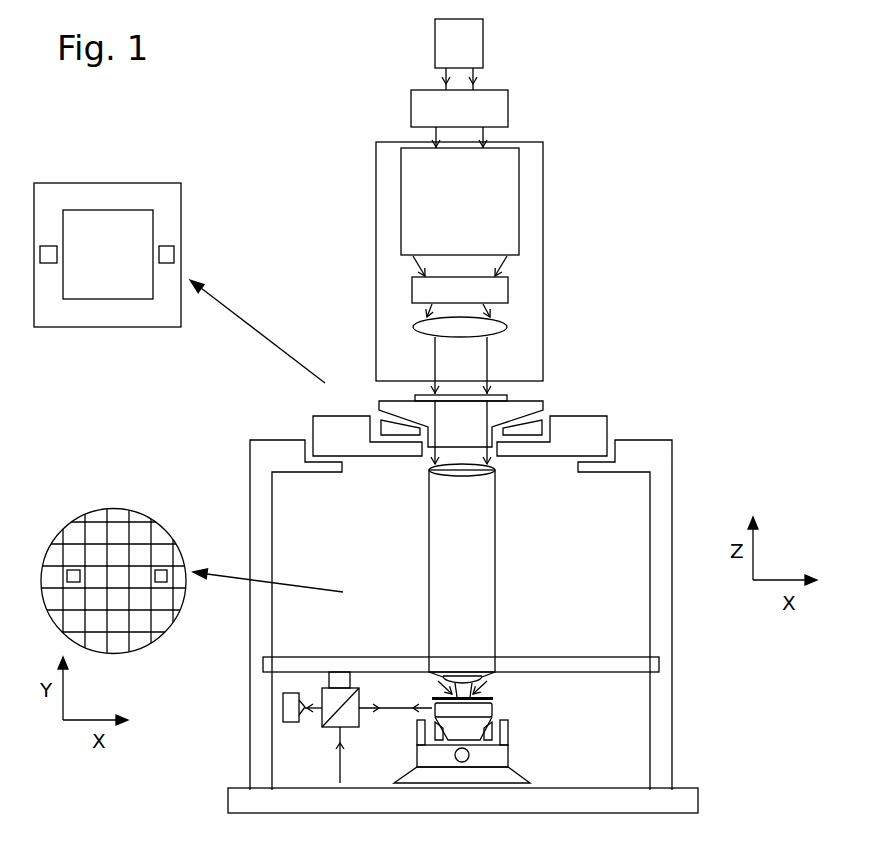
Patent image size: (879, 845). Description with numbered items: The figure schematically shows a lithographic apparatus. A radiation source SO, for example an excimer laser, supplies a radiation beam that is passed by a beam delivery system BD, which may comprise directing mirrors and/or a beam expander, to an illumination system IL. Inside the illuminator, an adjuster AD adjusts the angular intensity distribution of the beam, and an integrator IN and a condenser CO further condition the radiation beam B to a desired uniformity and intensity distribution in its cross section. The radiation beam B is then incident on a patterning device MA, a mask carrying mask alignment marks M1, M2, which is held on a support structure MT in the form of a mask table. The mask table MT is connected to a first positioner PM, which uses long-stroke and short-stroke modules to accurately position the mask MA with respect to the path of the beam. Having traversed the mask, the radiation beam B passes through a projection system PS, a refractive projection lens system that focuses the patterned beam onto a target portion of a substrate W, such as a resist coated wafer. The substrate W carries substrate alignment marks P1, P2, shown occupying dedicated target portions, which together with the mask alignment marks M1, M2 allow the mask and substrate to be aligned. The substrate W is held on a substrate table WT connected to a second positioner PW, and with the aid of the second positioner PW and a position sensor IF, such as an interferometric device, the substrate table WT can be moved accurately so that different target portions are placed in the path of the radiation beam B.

The radiation source SO is at (483, 47).
The beam delivery system BD is at (508, 113).
The illumination system IL is at (543, 163).
The adjuster AD is at (519, 211).
The integrator IN is at (508, 287).
The condenser CO is at (505, 326).
The radiation beam B is at (507, 396).
The patterning device MA is at (415, 397).
The mask alignment mark M1 is at (168, 246).
The mask alignment mark M2 is at (46, 246).
The support structure MT is at (545, 402).
The first positioner PM is at (313, 416).
The projection system PS is at (495, 560).
The substrate W is at (436, 697).
The substrate alignment mark P1 is at (72, 570).
The substrate alignment mark P2 is at (160, 570).
The substrate table WT is at (497, 706).
The second positioner PW is at (510, 757).
The position sensor IF is at (313, 735).